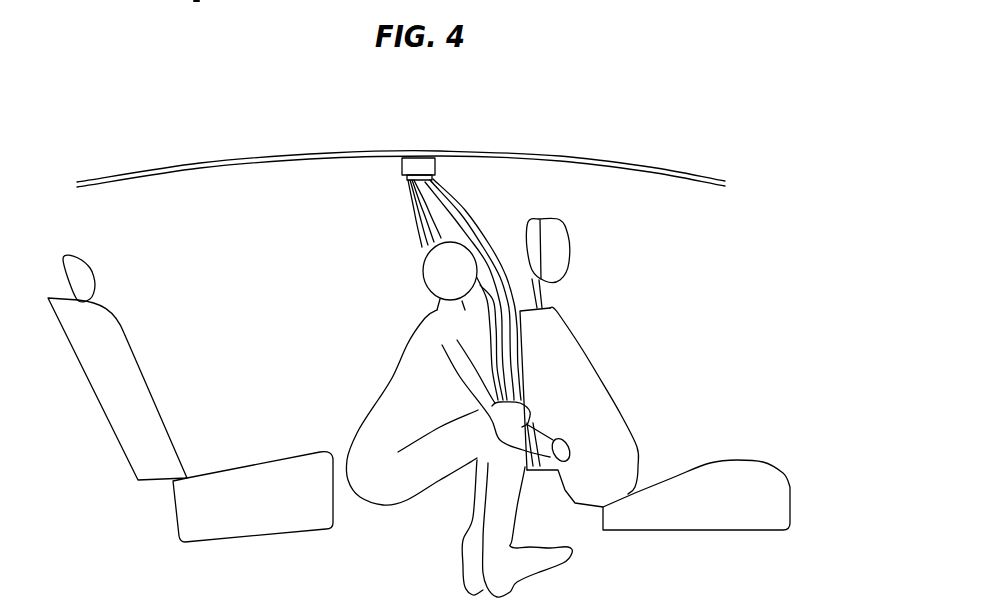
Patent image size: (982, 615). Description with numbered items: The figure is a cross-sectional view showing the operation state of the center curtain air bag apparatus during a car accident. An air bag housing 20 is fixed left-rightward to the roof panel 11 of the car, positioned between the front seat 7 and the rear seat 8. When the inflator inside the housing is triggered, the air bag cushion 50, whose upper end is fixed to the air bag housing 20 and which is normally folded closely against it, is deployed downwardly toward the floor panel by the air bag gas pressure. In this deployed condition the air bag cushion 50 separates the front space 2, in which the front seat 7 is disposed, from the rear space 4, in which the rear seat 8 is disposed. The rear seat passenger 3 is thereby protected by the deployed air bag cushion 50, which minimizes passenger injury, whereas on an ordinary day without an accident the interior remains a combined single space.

The front space 2 is at (668, 203).
The rear seat passenger 3 is at (392, 402).
The rear space 4 is at (307, 197).
The front seat 7 is at (676, 515).
The rear seat 8 is at (212, 525).
The roof panel 11 is at (530, 156).
The air bag housing 20 is at (415, 165).
The air bag cushion 50 is at (447, 213).